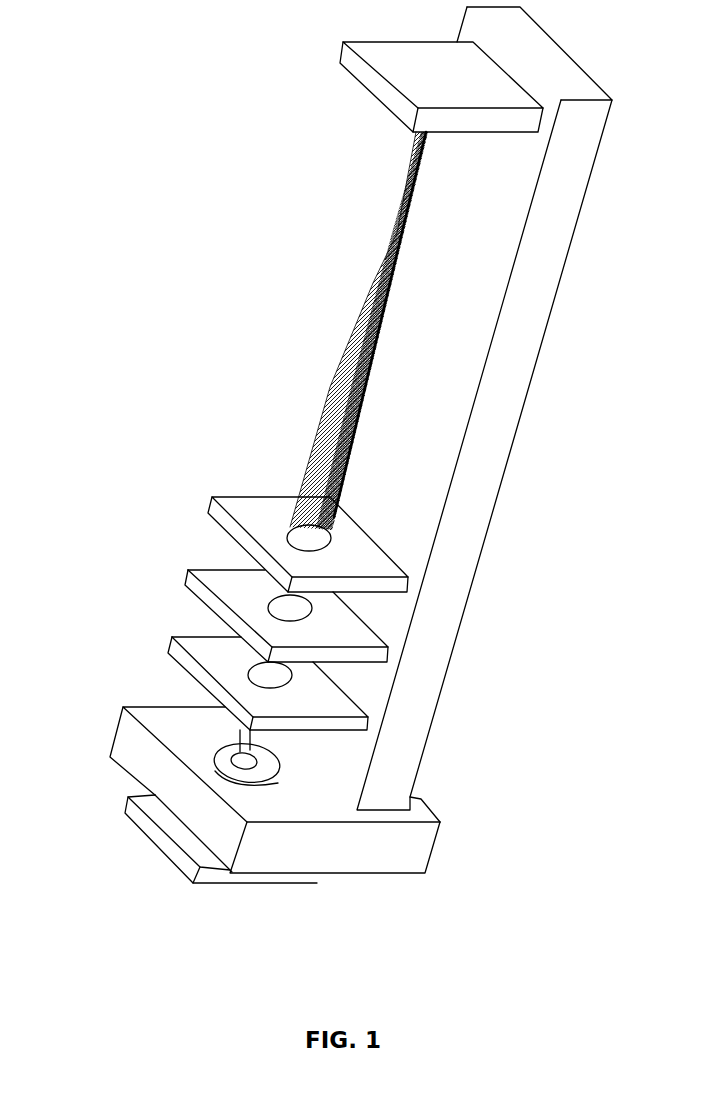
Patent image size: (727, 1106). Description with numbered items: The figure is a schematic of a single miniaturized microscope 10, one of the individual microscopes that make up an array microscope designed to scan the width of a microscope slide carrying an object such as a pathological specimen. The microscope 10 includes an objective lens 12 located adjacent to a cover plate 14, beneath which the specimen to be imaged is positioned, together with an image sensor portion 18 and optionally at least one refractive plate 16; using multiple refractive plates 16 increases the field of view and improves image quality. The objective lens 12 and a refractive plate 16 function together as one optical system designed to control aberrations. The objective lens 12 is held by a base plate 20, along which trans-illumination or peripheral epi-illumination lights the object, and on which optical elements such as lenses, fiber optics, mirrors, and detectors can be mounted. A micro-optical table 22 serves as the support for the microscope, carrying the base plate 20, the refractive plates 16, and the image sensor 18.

The miniaturized microscope 10 is at (177, 265).
The objective lens 12 is at (279, 784).
The cover plate 14 is at (158, 853).
The refractive plate 16 is at (188, 572).
The image sensor portion 18 is at (373, 103).
The base plate 20 is at (138, 695).
The micro-optical table 22 is at (498, 518).